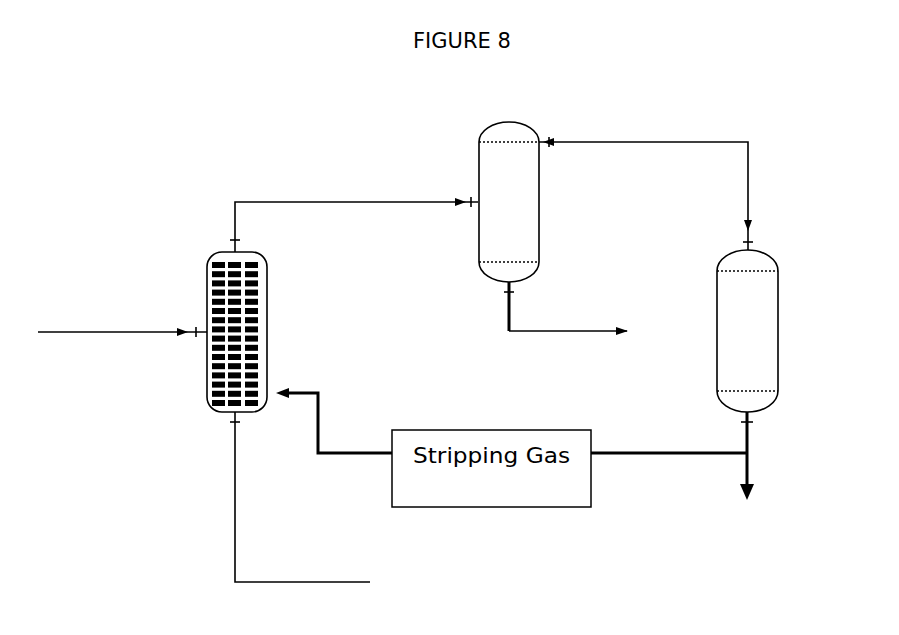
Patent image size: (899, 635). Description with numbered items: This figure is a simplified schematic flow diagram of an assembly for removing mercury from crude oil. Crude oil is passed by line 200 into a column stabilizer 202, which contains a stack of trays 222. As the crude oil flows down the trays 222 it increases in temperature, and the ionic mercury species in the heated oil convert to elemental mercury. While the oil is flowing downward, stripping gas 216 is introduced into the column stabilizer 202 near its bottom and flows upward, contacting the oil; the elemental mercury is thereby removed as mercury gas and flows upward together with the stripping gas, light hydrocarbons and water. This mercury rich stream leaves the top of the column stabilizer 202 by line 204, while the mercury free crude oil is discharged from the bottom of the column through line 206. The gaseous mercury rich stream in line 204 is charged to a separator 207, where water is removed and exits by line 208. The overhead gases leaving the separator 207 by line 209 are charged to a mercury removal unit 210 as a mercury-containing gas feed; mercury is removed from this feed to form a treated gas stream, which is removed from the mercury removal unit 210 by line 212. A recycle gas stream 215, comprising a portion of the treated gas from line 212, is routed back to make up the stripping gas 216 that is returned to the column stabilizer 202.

The line 200 is at (97, 332).
The column stabilizer 202 is at (268, 332).
The line 204 is at (292, 202).
The line 206 is at (235, 503).
The separator 207 is at (539, 200).
The line 208 is at (575, 331).
The line 209 is at (688, 142).
The mercury removal unit 210 is at (778, 330).
The line 212 is at (775, 456).
The recycle gas stream 215 is at (669, 436).
The stripping gas 216 is at (334, 420).
The trays 222 is at (258, 289).